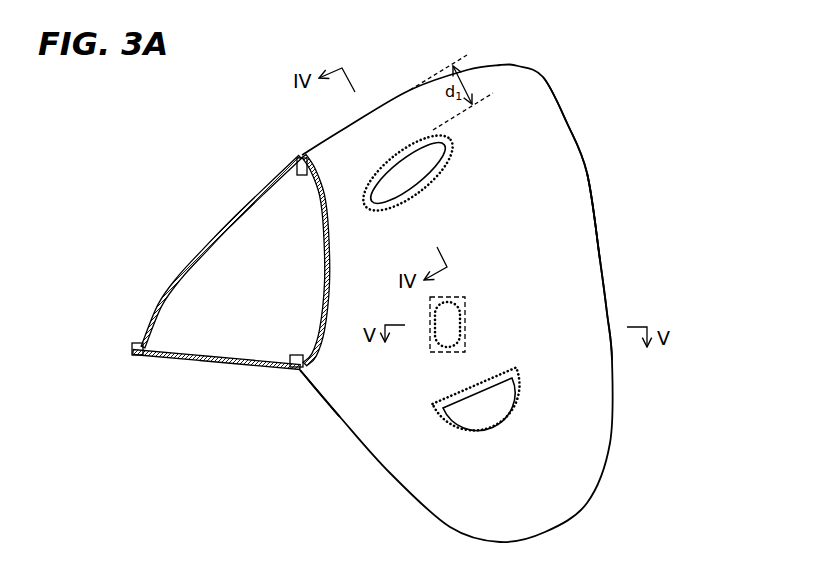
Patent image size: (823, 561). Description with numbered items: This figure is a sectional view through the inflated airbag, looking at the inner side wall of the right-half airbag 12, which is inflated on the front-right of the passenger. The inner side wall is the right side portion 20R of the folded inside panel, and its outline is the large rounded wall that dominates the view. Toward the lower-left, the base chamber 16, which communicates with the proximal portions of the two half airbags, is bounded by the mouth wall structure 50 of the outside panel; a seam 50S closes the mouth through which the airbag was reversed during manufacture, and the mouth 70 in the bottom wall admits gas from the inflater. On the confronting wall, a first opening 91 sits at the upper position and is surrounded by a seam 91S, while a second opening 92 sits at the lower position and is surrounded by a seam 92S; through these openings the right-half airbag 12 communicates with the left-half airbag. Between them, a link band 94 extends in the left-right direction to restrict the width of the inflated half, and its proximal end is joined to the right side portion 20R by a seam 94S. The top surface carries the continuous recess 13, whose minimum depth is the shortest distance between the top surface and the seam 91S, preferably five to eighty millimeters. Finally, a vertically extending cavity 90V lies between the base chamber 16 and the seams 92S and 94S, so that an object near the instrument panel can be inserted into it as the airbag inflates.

The right-half airbag 12 is at (553, 75).
The recess 13 is at (567, 273).
The base chamber 16 is at (233, 250).
The right side portion 20R is at (595, 223).
The mouth wall structure 50 is at (180, 268).
The seam 50S is at (140, 357).
The mouth 70 is at (227, 367).
The cavity 90V is at (367, 393).
The first opening 91 is at (408, 153).
The seam 91S is at (373, 172).
The second opening 92 is at (493, 418).
The seam 92S is at (518, 383).
The link band 94 is at (465, 300).
The seam 94S is at (435, 337).